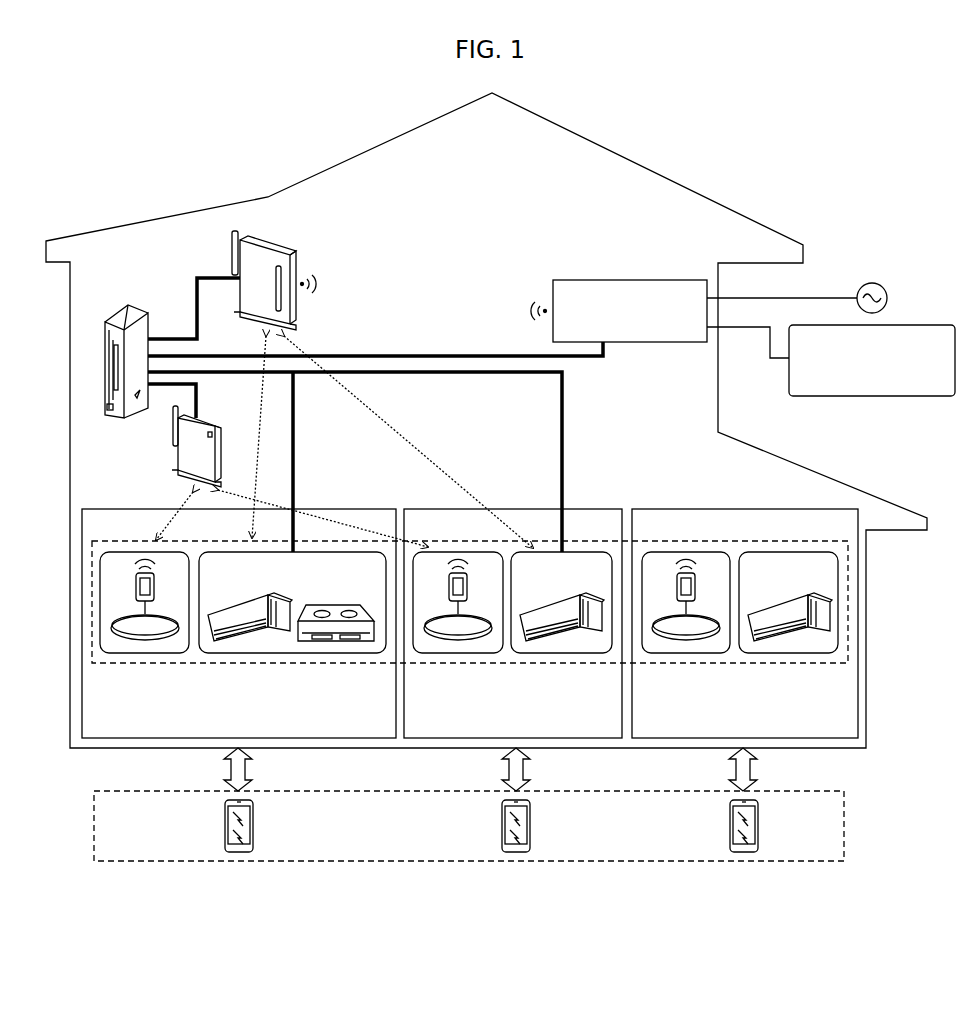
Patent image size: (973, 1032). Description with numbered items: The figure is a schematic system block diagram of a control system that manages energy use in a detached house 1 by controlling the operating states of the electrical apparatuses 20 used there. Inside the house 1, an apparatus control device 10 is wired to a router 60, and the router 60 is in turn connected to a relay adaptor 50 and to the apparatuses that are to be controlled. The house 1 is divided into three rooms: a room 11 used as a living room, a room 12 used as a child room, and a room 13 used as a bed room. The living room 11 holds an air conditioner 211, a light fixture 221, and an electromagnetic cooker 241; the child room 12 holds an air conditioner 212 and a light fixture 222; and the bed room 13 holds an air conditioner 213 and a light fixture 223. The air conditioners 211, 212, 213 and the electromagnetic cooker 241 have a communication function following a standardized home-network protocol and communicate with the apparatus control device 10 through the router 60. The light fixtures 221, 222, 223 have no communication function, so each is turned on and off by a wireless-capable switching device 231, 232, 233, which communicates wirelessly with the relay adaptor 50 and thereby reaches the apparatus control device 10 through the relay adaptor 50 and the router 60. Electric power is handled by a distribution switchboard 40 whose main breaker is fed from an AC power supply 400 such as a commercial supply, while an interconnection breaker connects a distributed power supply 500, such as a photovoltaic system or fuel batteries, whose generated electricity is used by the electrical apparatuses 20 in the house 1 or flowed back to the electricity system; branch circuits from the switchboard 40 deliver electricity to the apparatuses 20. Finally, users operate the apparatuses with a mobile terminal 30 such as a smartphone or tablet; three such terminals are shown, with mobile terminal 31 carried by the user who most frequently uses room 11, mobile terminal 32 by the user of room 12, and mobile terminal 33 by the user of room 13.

The house 1 is at (615, 156).
The apparatus control device 10 is at (281, 249).
The distribution switchboard 40 is at (668, 281).
The AC power supply 400 is at (873, 283).
The distributed power supply 500 is at (876, 396).
The router 60 is at (132, 313).
The relay adaptor 50 is at (204, 421).
The electrical apparatuses 20 is at (850, 600).
The room 11 is at (128, 750).
The room 12 is at (450, 750).
The room 13 is at (662, 750).
The air conditioner 211 is at (246, 642).
The air conditioner 212 is at (565, 642).
The air conditioner 213 is at (794, 642).
The light fixture 221 is at (143, 641).
The light fixture 222 is at (456, 641).
The light fixture 223 is at (684, 641).
The switching device 231 is at (134, 585).
The switching device 232 is at (468, 588).
The switching device 233 is at (696, 588).
The electromagnetic cooker 241 is at (336, 642).
The mobile terminal 30 is at (845, 818).
The mobile terminal 31 is at (255, 823).
The mobile terminal 32 is at (532, 823).
The mobile terminal 33 is at (760, 823).